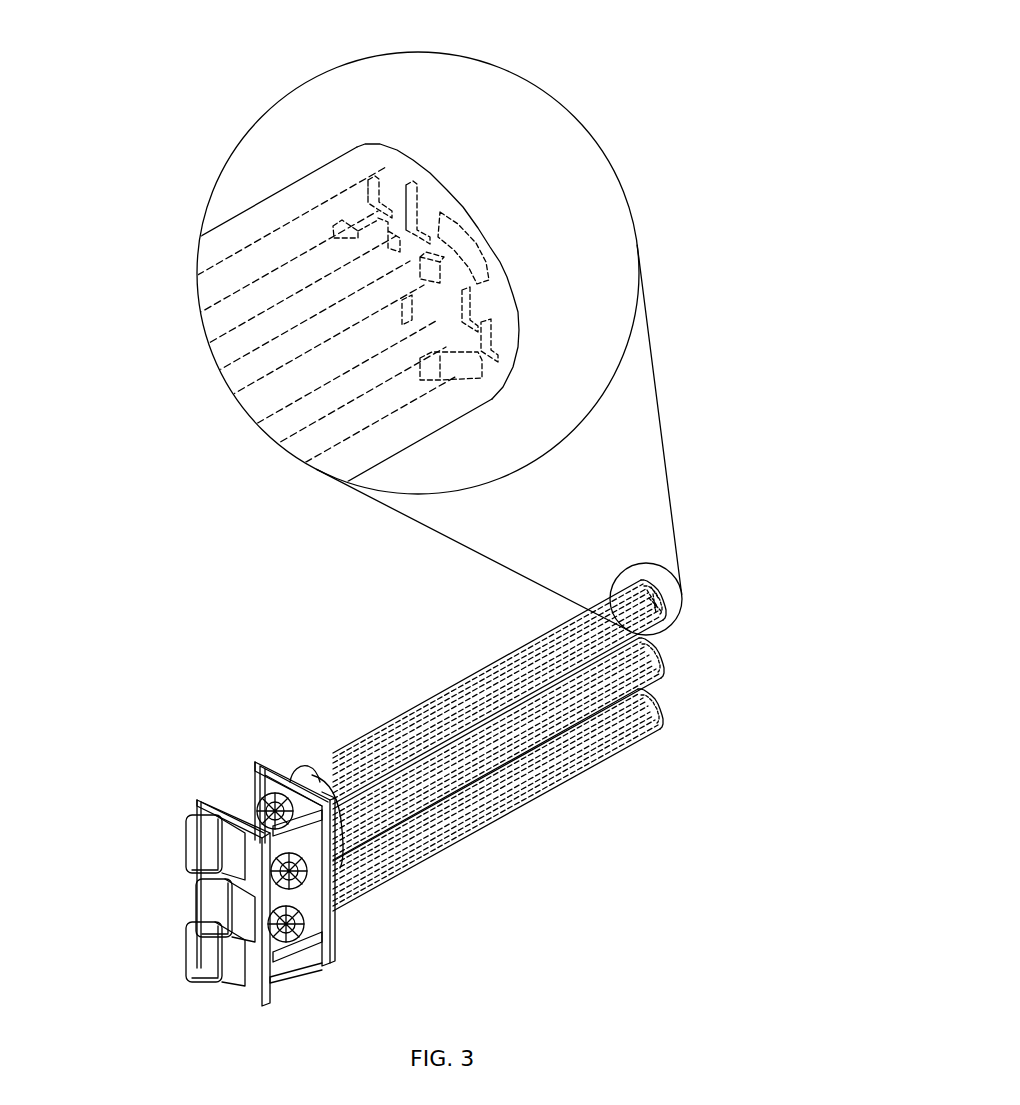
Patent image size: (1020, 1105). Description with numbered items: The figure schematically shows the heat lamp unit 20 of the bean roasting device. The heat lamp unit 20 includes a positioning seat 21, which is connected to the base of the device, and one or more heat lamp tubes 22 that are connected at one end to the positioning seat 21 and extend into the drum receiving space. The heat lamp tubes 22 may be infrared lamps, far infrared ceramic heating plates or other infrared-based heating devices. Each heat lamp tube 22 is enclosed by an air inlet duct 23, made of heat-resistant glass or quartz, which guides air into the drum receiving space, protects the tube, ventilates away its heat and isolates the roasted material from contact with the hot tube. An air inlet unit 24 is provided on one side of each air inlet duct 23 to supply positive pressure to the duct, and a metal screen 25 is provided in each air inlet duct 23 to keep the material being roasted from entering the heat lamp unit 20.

The heat lamp unit 20 is at (441, 689).
The positioning seat 21 is at (333, 962).
The heat lamp tube 22 is at (260, 350).
The air inlet duct 23 is at (217, 253).
The air inlet unit 24 is at (204, 847).
The metal screen 25 is at (453, 263).